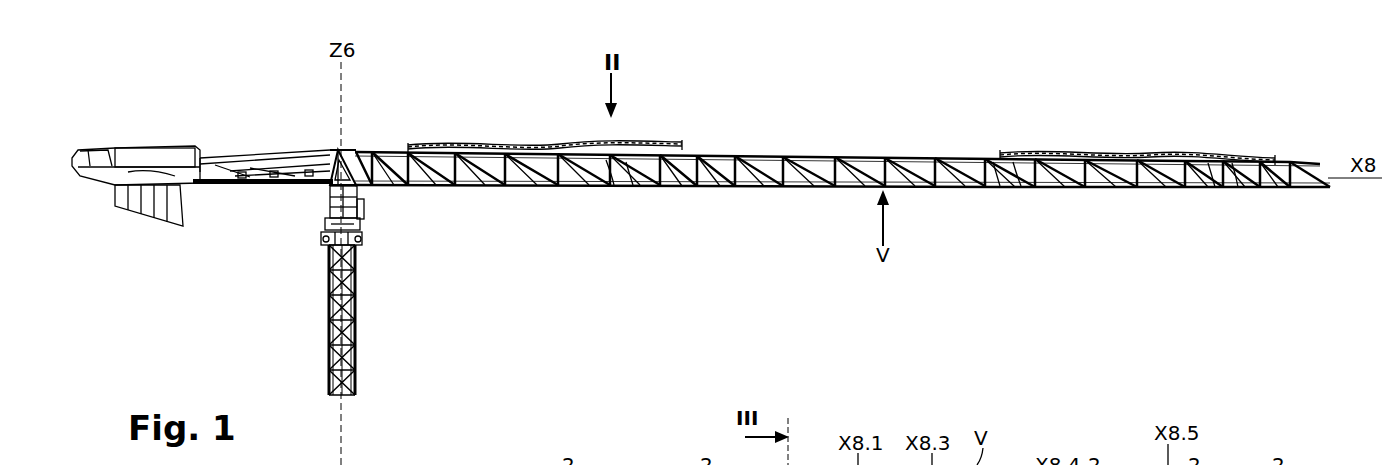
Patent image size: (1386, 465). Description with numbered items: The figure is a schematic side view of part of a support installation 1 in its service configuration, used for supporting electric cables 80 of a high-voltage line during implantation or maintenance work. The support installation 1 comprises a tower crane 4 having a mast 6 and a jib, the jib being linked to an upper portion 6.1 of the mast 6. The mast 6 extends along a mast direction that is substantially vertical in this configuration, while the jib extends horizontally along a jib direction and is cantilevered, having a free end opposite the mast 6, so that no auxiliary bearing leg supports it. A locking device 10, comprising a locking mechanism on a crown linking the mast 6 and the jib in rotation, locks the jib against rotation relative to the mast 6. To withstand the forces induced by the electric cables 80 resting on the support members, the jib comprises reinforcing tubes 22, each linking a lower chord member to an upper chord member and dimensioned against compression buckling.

The support installation 1 is at (228, 121).
The tower crane 4 is at (248, 273).
The mast 6 is at (327, 291).
The upper portion of the mast 6.1 is at (331, 201).
The locking device 10 is at (362, 213).
The reinforcing tubes 22 is at (630, 168).
The electric cables 80 is at (452, 142).